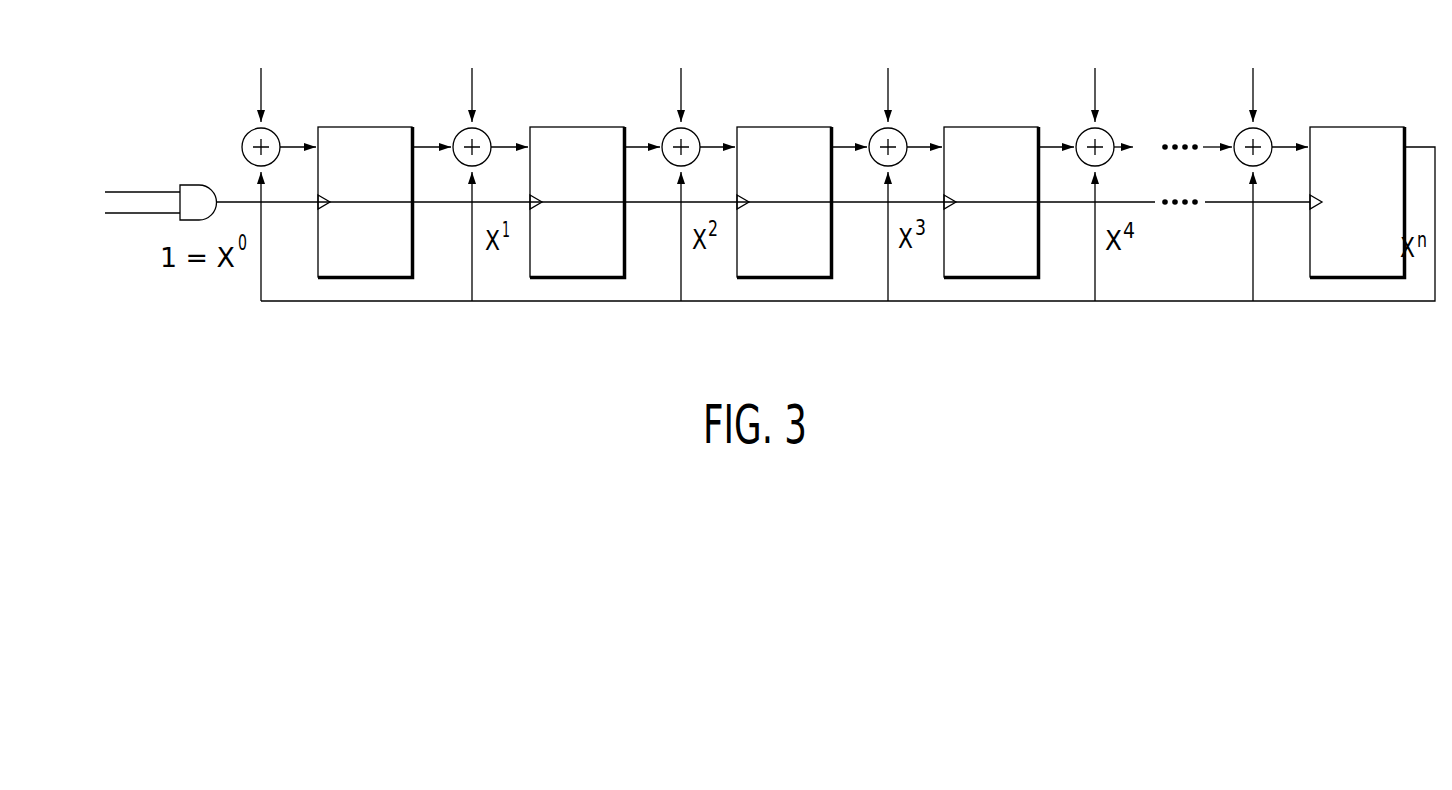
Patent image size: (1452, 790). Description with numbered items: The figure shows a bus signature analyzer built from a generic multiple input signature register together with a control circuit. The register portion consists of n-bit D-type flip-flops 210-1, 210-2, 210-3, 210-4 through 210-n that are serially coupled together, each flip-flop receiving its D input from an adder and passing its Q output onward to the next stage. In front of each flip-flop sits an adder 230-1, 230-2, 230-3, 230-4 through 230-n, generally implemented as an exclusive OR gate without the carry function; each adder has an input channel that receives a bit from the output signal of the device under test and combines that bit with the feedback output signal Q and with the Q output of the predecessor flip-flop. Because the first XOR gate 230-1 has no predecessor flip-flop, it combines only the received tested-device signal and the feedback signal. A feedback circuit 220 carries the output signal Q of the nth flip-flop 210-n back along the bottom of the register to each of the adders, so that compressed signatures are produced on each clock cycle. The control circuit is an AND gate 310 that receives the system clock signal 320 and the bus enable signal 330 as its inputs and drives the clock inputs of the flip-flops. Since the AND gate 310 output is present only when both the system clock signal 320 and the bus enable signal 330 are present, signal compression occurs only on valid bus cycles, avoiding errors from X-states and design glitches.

The AND gate 310 is at (193, 185).
The system clock signal 320 is at (165, 190).
The bus enable signal 330 is at (147, 213).
The first XOR gate 230-1 is at (273, 132).
The adder 230-2 is at (484, 132).
The adder 230-3 is at (693, 132).
The adder 230-4 is at (900, 132).
The adder 230-n is at (1267, 134).
The D-type flip-flop 210-1 is at (415, 100).
The D-type flip-flop 210-2 is at (627, 100).
The D-type flip-flop 210-3 is at (834, 100).
The D-type flip-flop 210-4 is at (1041, 100).
The D-type flip-flop 210-n is at (1393, 98).
The feedback circuit 220 is at (808, 302).